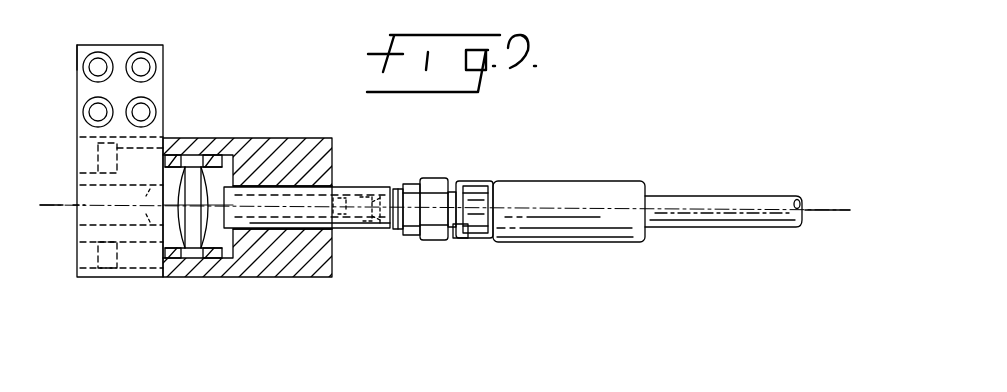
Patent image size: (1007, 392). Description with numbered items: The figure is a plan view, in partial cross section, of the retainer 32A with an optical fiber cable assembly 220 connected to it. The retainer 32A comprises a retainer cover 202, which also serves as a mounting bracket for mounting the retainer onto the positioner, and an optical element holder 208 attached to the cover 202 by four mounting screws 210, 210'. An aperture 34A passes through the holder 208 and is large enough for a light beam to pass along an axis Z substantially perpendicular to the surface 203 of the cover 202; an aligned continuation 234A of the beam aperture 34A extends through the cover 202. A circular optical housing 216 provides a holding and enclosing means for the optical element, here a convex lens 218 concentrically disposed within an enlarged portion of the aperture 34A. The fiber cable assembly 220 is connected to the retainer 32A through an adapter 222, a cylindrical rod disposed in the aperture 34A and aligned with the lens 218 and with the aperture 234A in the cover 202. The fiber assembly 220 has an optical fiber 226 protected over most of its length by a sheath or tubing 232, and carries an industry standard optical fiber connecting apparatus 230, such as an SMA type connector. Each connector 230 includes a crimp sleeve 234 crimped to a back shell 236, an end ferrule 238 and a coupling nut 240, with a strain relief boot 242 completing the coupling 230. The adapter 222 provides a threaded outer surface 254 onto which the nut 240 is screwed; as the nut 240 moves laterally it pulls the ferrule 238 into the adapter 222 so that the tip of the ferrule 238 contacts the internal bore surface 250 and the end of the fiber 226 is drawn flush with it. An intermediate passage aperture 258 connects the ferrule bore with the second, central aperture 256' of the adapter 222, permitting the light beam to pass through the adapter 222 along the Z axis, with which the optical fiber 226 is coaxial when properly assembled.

The retainer cover 202 is at (162, 52).
The surface of cover member 203 is at (76, 67).
The mounting screws 210 is at (95, 157).
The hidden passage 210' is at (115, 274).
The aligned continuation of beam aperture 234A is at (101, 206).
The optical element holder 208 is at (282, 138).
The convex lens 218 is at (208, 160).
The optical housing 216 is at (213, 258).
The adapter 222 is at (352, 188).
The intermediate passage aperture 258 is at (352, 230).
The internal surface 250 is at (387, 230).
The end ferrule 238 is at (387, 230).
The aperture 34A is at (248, 225).
The passage 256' is at (275, 300).
The axis Z is at (300, 282).
The threaded outer surface 254 is at (395, 237).
The coupling nut 240 is at (430, 182).
The strain relief boot 242 is at (477, 182).
The crimp sleeve 234 is at (480, 205).
The back shell 236 is at (463, 240).
The optical fiber connecting apparatus 230 is at (637, 178).
The protective sheath or tubing 232 is at (763, 225).
The optical fiber 226 is at (820, 210).
The optical fiber cable assembly 220 is at (723, 240).
The retainer 32A is at (233, 128).